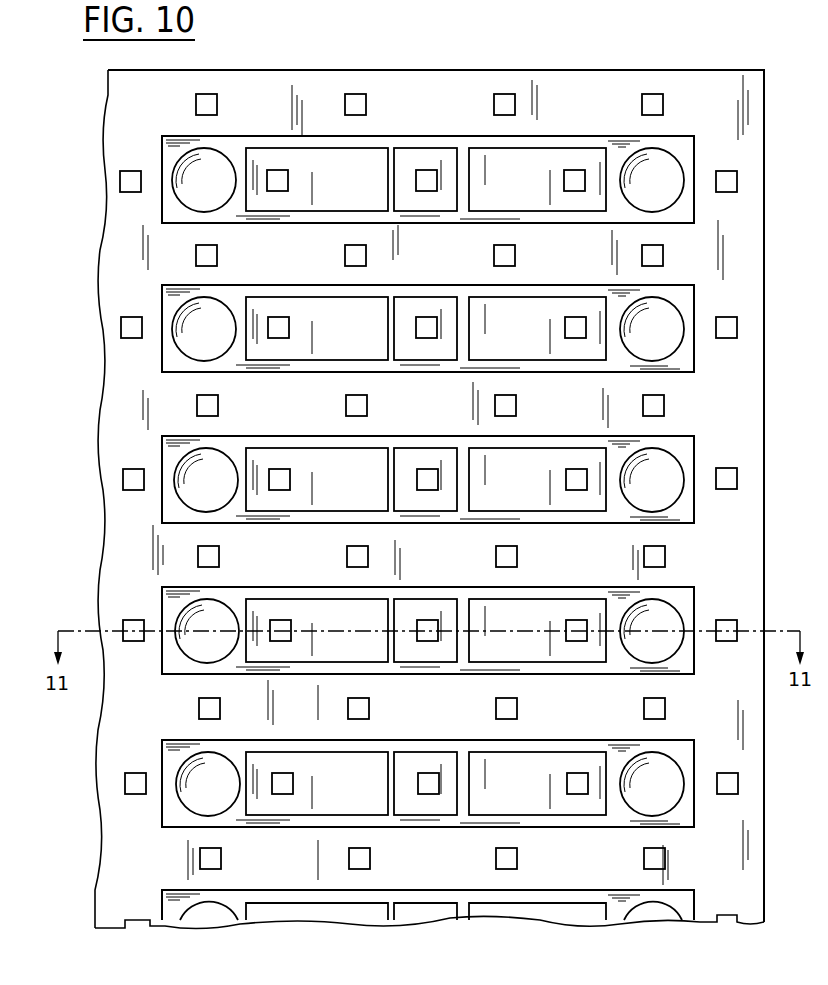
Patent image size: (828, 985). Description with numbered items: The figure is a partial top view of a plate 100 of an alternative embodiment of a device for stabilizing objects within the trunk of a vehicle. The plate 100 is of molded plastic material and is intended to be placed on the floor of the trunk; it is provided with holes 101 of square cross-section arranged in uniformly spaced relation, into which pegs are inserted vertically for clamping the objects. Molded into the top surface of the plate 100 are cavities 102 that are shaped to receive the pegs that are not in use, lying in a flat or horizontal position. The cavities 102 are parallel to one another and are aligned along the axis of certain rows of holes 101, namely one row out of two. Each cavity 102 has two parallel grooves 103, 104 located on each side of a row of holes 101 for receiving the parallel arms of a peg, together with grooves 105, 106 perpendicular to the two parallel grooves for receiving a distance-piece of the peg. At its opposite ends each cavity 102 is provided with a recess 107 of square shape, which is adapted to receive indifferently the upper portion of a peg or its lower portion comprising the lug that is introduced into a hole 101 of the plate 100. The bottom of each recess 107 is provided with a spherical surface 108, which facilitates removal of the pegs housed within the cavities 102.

The plate 100 is at (568, 88).
The holes 101 is at (350, 95).
The cavities 102 is at (288, 374).
The parallel groove 103 is at (357, 294).
The parallel groove 104 is at (410, 374).
The perpendicular groove 105 is at (392, 320).
The perpendicular groove 106 is at (466, 327).
The recess 107 is at (172, 358).
The spherical surface 108 is at (180, 470).